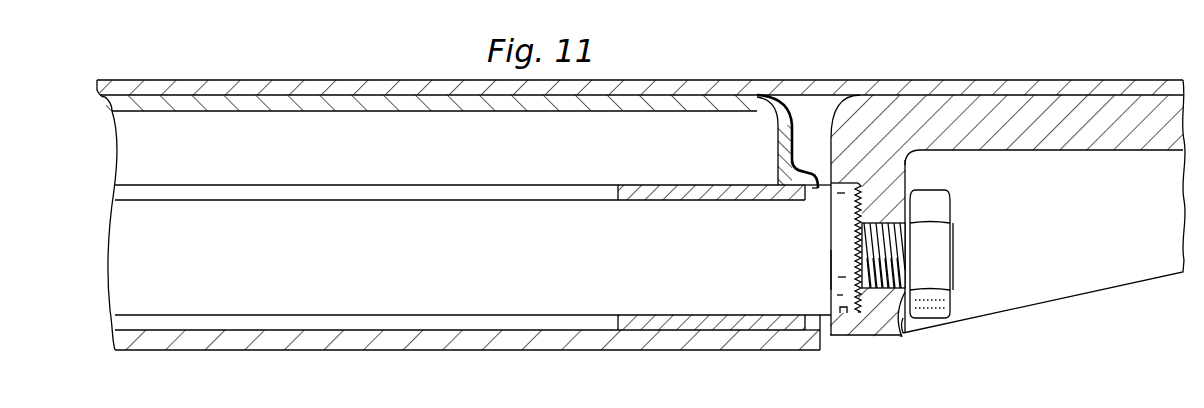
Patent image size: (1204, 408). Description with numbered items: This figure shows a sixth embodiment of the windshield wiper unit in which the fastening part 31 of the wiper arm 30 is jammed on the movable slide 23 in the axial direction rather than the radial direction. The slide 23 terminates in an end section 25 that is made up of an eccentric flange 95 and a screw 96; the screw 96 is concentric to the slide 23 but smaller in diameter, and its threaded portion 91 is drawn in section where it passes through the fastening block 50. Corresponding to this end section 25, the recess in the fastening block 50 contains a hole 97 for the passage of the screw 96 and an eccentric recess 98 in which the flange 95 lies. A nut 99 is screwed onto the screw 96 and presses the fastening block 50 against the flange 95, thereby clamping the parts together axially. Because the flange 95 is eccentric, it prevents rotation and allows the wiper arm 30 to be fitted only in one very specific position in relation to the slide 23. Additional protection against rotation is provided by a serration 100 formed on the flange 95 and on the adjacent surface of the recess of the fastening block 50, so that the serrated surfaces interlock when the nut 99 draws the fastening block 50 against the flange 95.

The slide 23 is at (713, 243).
The end section 25 is at (824, 268).
The wiper arm 30 is at (1070, 54).
The fastening part 31 is at (1115, 100).
The fastening block 50 is at (877, 326).
The threaded stud 91 is at (892, 210).
The eccentric flange 95 is at (845, 254).
The screw 96 is at (903, 318).
The hole 97 is at (913, 242).
The eccentric recess 98 is at (843, 313).
The nut 99 is at (935, 268).
The serration 100 is at (870, 174).